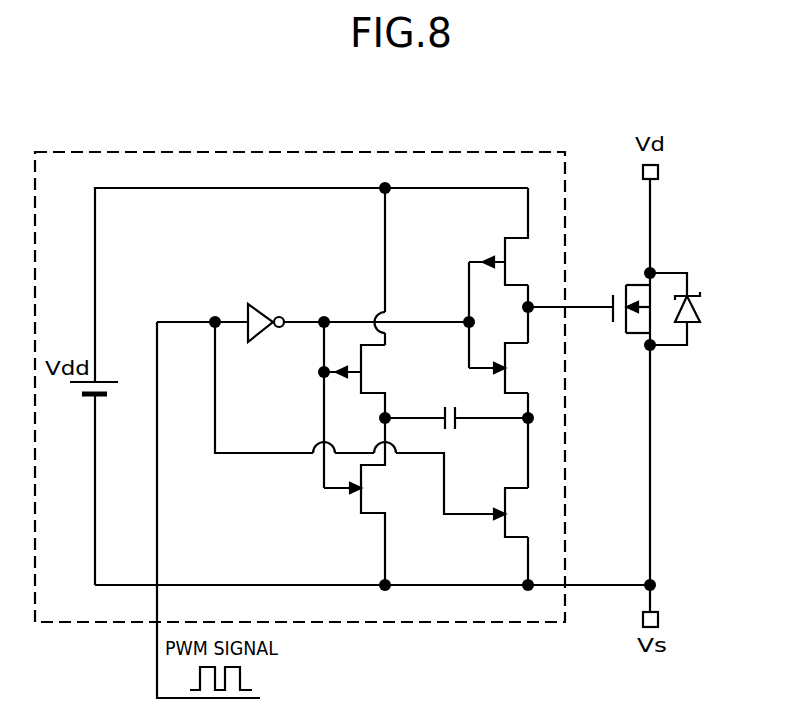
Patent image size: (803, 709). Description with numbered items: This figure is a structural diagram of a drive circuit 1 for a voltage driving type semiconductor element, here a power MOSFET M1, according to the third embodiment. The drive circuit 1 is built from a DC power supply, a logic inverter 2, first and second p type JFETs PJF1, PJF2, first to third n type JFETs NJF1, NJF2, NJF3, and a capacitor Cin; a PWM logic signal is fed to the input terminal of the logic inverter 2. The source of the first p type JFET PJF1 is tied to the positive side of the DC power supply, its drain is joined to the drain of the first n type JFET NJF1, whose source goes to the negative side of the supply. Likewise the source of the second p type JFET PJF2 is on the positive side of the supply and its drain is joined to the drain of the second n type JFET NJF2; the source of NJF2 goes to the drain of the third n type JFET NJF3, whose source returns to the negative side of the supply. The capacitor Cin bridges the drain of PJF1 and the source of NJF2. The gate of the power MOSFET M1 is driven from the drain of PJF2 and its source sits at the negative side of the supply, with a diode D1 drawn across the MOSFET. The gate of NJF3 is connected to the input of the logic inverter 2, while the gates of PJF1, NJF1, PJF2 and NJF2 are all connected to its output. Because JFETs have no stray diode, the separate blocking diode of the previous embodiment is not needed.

The drive circuit 1 is at (80, 152).
The logic inverter 2 is at (268, 325).
The first p type JFET PJF1 is at (382, 381).
The second p type JFET PJF2 is at (531, 236).
The first n type JFET NJF1 is at (380, 501).
The second n type JFET NJF2 is at (531, 368).
The third n type JFET NJF3 is at (543, 512).
The capacitor Cin is at (456, 406).
The power MOSFET M1 is at (638, 302).
The body diode D1 is at (695, 310).